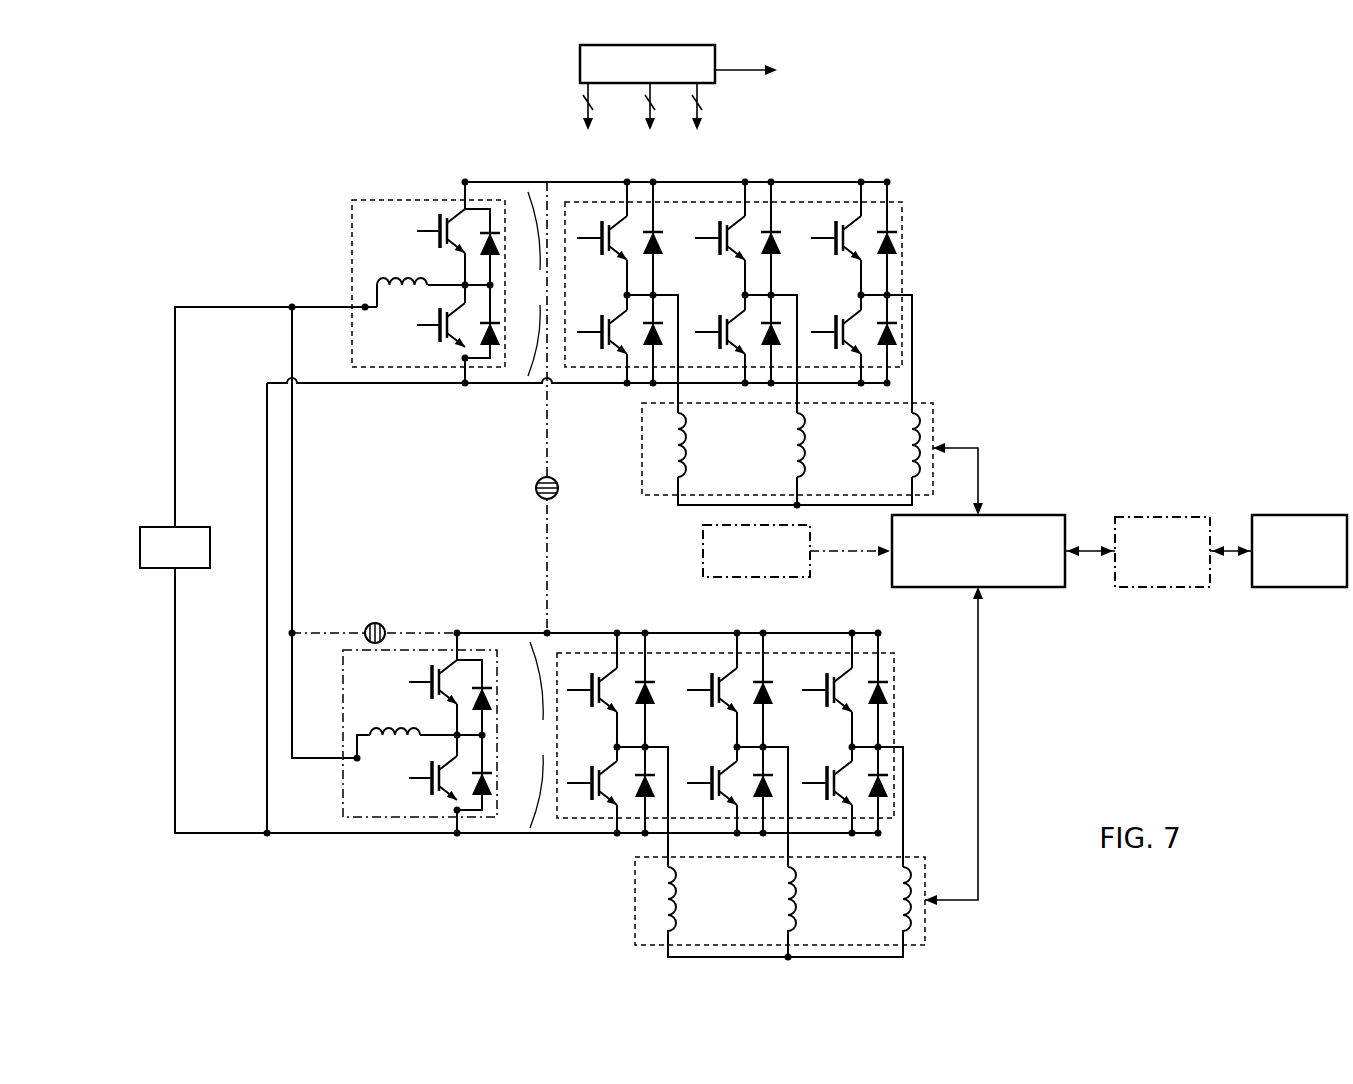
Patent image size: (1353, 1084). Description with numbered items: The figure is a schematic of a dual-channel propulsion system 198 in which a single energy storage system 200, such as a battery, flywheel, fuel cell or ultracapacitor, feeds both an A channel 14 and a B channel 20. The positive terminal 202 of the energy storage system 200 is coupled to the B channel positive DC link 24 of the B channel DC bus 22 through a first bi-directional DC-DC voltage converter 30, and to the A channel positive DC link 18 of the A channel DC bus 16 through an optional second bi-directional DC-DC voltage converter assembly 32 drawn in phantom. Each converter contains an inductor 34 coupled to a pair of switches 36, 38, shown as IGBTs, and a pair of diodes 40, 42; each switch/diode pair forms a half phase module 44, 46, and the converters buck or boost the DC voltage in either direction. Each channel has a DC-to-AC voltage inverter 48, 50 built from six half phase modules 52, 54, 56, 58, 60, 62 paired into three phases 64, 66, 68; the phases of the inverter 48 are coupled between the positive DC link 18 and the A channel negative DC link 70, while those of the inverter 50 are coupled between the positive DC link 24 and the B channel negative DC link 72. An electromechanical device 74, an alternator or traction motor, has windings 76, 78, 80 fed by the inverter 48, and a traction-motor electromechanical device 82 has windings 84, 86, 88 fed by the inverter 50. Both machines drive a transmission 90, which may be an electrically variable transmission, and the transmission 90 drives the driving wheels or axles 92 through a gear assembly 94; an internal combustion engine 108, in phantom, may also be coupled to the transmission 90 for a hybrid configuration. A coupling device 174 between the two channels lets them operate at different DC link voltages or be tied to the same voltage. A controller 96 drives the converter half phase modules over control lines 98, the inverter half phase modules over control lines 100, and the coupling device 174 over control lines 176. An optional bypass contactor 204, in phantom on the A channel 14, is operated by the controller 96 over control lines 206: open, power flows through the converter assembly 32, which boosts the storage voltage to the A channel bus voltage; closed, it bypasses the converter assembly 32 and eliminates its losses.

The dual-channel propulsion system 198 is at (168, 140).
The A channel 14 is at (410, 610).
The A channel DC bus 16 is at (538, 735).
The A channel positive DC link 18 is at (493, 633).
The B channel 20 is at (362, 184).
The B channel DC bus 22 is at (530, 284).
The B channel positive DC link 24 is at (505, 182).
The first bi-directional DC-DC voltage converter 30 is at (407, 200).
The second bi-directional DC-DC voltage converter assembly 32 is at (343, 684).
The inductor 34 is at (384, 278).
The switch 36 is at (430, 243).
The switch 38 is at (426, 338).
The diode 40 is at (495, 250).
The diode 42 is at (495, 330).
The half phase module 44 is at (420, 218).
The half phase module 46 is at (420, 312).
The DC-to-AC voltage inverter 48 is at (897, 678).
The DC-to-AC voltage inverter 50 is at (905, 226).
The half phase module 52 is at (604, 210).
The half phase module 54 is at (722, 210).
The half phase module 56 is at (832, 210).
The half phase module 58 is at (602, 304).
The half phase module 60 is at (718, 304).
The half phase module 62 is at (832, 304).
The phase 64 is at (626, 176).
The phase 66 is at (744, 176).
The phase 68 is at (856, 170).
The A channel negative DC link 70 is at (493, 834).
The B channel negative DC link 72 is at (508, 384).
The electromechanical device 74 is at (791, 774).
The winding 76 is at (676, 904).
The winding 78 is at (796, 904).
The winding 80 is at (902, 878).
The electromechanical device 82 is at (795, 459).
The winding 84 is at (686, 452).
The winding 86 is at (805, 452).
The winding 88 is at (908, 430).
The transmission 90 is at (1028, 587).
The driving wheels or axles 92 is at (1292, 587).
The gear assembly 94 is at (1158, 587).
The controller 96 is at (580, 75).
The control lines 98 is at (644, 90).
The control lines 100 is at (703, 92).
The internal combustion engine 108 is at (703, 553).
The coupling device 174 is at (558, 486).
The control lines 176 is at (580, 90).
The energy storage system 200 is at (212, 545).
The positive terminal 202 is at (172, 527).
The bypass contactor 204 is at (370, 623).
The control lines 206 is at (725, 70).